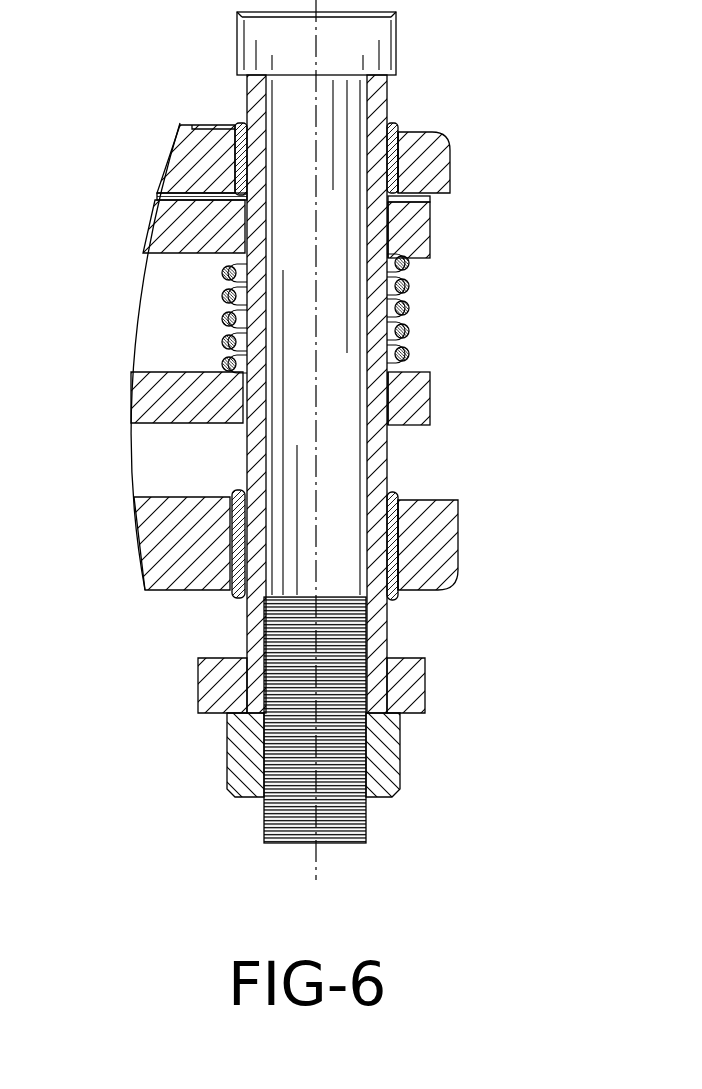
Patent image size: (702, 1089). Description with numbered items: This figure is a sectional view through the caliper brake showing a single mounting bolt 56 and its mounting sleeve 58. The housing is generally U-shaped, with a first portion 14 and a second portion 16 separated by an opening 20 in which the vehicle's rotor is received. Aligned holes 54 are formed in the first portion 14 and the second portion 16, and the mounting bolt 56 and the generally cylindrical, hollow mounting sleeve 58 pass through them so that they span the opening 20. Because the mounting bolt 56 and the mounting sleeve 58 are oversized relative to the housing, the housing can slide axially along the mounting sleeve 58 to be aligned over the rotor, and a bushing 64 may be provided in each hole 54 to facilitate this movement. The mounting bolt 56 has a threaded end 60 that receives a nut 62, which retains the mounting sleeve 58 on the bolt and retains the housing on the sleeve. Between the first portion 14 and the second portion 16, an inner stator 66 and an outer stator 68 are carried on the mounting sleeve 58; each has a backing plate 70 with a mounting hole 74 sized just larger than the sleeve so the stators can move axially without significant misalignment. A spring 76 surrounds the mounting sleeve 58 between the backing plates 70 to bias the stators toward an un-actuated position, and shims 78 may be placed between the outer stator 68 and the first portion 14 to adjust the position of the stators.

The first portion 14 is at (432, 155).
The second portion 16 is at (437, 573).
The opening 20 is at (192, 330).
The holes 54 is at (400, 133).
The mounting bolt 56 is at (297, 117).
The mounting sleeve 58 is at (385, 475).
The threaded end 60 is at (358, 820).
The nut 62 is at (385, 755).
The bushing 64 is at (393, 180).
The inner stator 66 is at (432, 405).
The outer stator 68 is at (430, 233).
The backing plate 70 is at (410, 242).
The mounting holes 74 is at (240, 236).
The spring 76 is at (403, 330).
The shims 78 is at (238, 193).